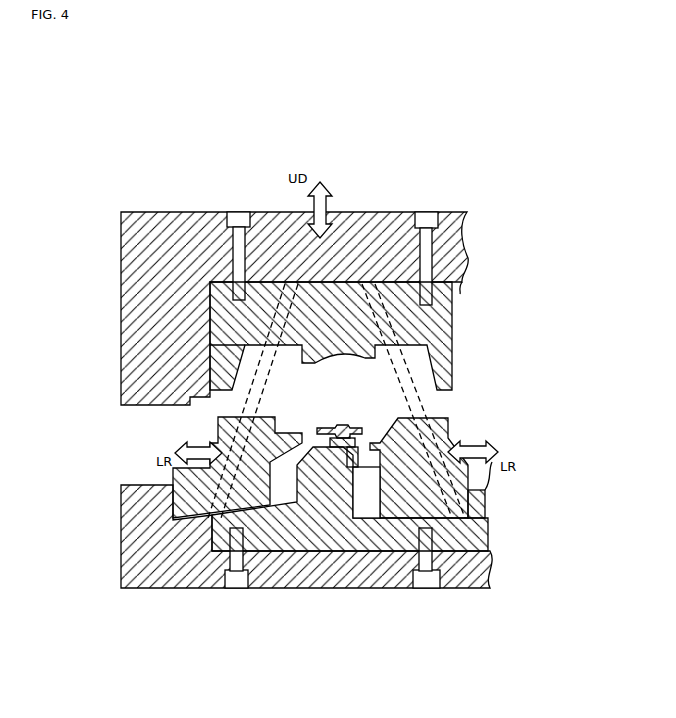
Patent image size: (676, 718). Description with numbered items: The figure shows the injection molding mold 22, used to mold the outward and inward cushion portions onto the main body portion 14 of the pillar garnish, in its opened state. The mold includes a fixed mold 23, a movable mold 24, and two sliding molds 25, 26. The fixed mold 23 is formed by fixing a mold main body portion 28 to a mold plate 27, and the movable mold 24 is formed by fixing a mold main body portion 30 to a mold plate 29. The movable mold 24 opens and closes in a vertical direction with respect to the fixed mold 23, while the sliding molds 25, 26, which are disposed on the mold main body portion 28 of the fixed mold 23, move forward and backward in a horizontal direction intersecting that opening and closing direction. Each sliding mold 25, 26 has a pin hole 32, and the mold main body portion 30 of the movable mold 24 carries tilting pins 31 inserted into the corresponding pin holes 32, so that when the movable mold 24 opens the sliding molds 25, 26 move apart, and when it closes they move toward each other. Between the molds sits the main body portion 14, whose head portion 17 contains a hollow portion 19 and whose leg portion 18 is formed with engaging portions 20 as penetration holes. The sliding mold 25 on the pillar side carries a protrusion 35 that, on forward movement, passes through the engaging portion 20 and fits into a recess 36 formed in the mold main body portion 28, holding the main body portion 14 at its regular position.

The injection molding mold 22 is at (186, 166).
The movable mold 24 is at (267, 208).
The mold plate 29 is at (340, 300).
The mold main body portion 30 is at (362, 292).
The tilting pin 31 is at (250, 362).
The pin hole 32 is at (217, 418).
The sliding mold 25 is at (450, 430).
The sliding mold 26 is at (205, 446).
The protrusion 35 is at (376, 450).
The recess 36 is at (353, 458).
The main body portion 14 is at (343, 424).
The head portion 17 is at (333, 425).
The hollow portion 19 is at (327, 431).
The engaging portion 20 is at (357, 458).
The leg portion 18 is at (366, 483).
The fixed mold 23 is at (290, 589).
The mold plate 27 is at (320, 578).
The mold main body portion 28 is at (366, 548).